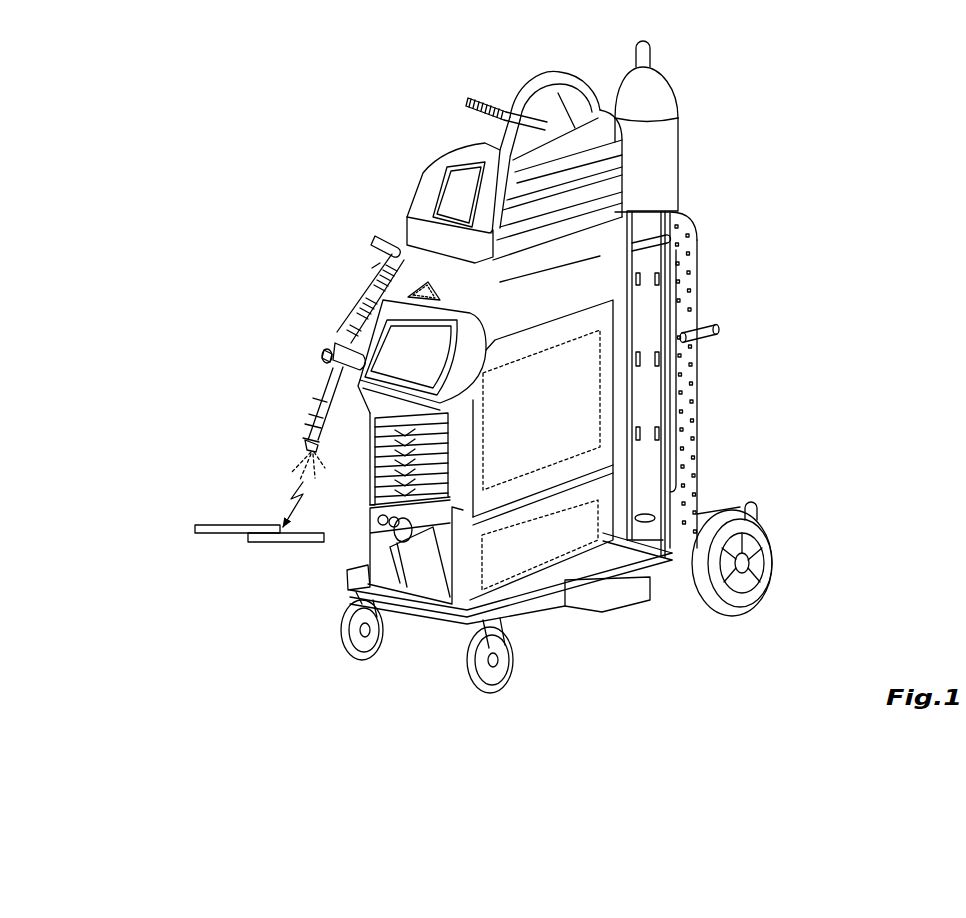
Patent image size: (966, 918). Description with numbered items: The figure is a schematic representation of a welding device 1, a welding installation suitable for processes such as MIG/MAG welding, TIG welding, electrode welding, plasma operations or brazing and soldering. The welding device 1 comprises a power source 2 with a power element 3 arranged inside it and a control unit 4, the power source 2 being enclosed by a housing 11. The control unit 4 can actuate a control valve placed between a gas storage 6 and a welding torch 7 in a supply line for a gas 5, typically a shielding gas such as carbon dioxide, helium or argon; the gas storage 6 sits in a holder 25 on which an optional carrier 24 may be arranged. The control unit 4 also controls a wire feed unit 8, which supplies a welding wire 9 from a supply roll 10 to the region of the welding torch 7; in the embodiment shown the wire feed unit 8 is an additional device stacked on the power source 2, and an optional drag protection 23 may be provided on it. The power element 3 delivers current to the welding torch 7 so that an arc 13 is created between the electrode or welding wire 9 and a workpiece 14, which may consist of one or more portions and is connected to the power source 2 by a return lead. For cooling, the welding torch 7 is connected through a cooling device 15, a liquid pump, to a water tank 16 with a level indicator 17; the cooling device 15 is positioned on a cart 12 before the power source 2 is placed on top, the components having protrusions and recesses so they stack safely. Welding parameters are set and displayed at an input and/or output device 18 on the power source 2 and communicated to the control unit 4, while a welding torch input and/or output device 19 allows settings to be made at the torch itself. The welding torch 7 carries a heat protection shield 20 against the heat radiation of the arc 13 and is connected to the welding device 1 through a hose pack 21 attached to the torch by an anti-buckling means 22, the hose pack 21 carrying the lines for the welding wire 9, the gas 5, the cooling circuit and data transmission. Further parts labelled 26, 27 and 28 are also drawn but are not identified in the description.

The welding device 1 is at (245, 187).
The power source 2 is at (583, 347).
The power element 3 is at (573, 423).
The control unit 4 is at (567, 364).
The gas 5 is at (282, 460).
The gas storage 6 is at (658, 160).
The welding torch 7 is at (415, 349).
The wire feed unit 8 is at (438, 152).
The welding wire 9 is at (303, 443).
The supply roll 10 is at (530, 90).
The housing 11 is at (608, 290).
The cart 12 is at (598, 577).
The arc 13 is at (265, 490).
The workpiece 14 is at (218, 530).
The cooling device 15 is at (387, 557).
The water tank 16 is at (533, 547).
The level indicator 17 is at (497, 618).
The input and/or output device 18 is at (370, 320).
The welding torch input and/or output device 19 is at (340, 340).
The heat protection shield 20 is at (322, 359).
The hose pack 21 is at (405, 252).
The anti-buckling means 22 is at (740, 590).
The drag protection 23 is at (580, 175).
The carrier 24 is at (643, 478).
The holder 25 is at (375, 238).
The handle 26 is at (712, 332).
The fastening element 27 is at (655, 517).
The cable 28 is at (372, 268).